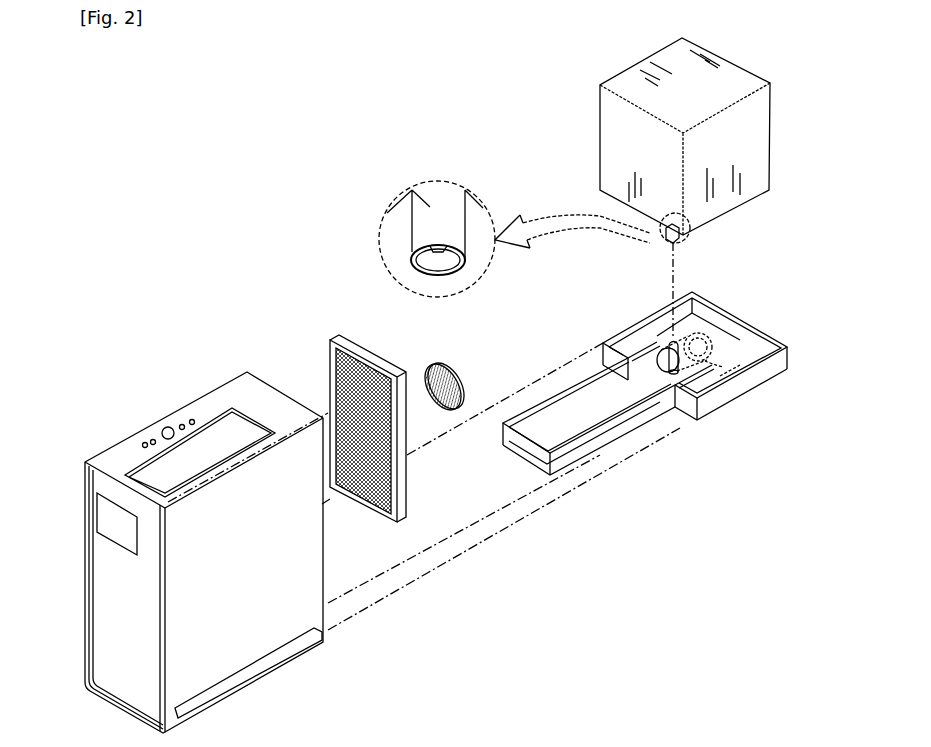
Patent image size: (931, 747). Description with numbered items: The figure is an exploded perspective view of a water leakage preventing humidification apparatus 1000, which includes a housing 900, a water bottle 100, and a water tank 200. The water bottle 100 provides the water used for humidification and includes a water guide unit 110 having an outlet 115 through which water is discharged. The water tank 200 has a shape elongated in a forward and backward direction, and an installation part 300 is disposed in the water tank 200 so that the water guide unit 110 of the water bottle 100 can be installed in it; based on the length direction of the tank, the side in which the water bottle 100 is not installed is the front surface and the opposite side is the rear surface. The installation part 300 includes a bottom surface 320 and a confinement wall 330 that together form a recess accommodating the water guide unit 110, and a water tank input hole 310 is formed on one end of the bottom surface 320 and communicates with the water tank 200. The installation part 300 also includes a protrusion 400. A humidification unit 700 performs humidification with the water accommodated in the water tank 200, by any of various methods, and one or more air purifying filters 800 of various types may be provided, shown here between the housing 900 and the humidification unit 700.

The water bottle 100 is at (612, 146).
The water guide unit 110 is at (412, 190).
The outlet 115 is at (412, 250).
The water tank 200 is at (640, 418).
The installation part 300 is at (700, 332).
The water tank input hole 310 is at (712, 347).
The bottom surface 320 is at (735, 372).
The confinement wall 330 is at (723, 367).
The protrusion 400 is at (660, 338).
The humidification unit 700 is at (437, 366).
The air purifying filter 800 is at (340, 336).
The housing 900 is at (187, 408).
The humidification apparatus 1000 is at (471, 603).